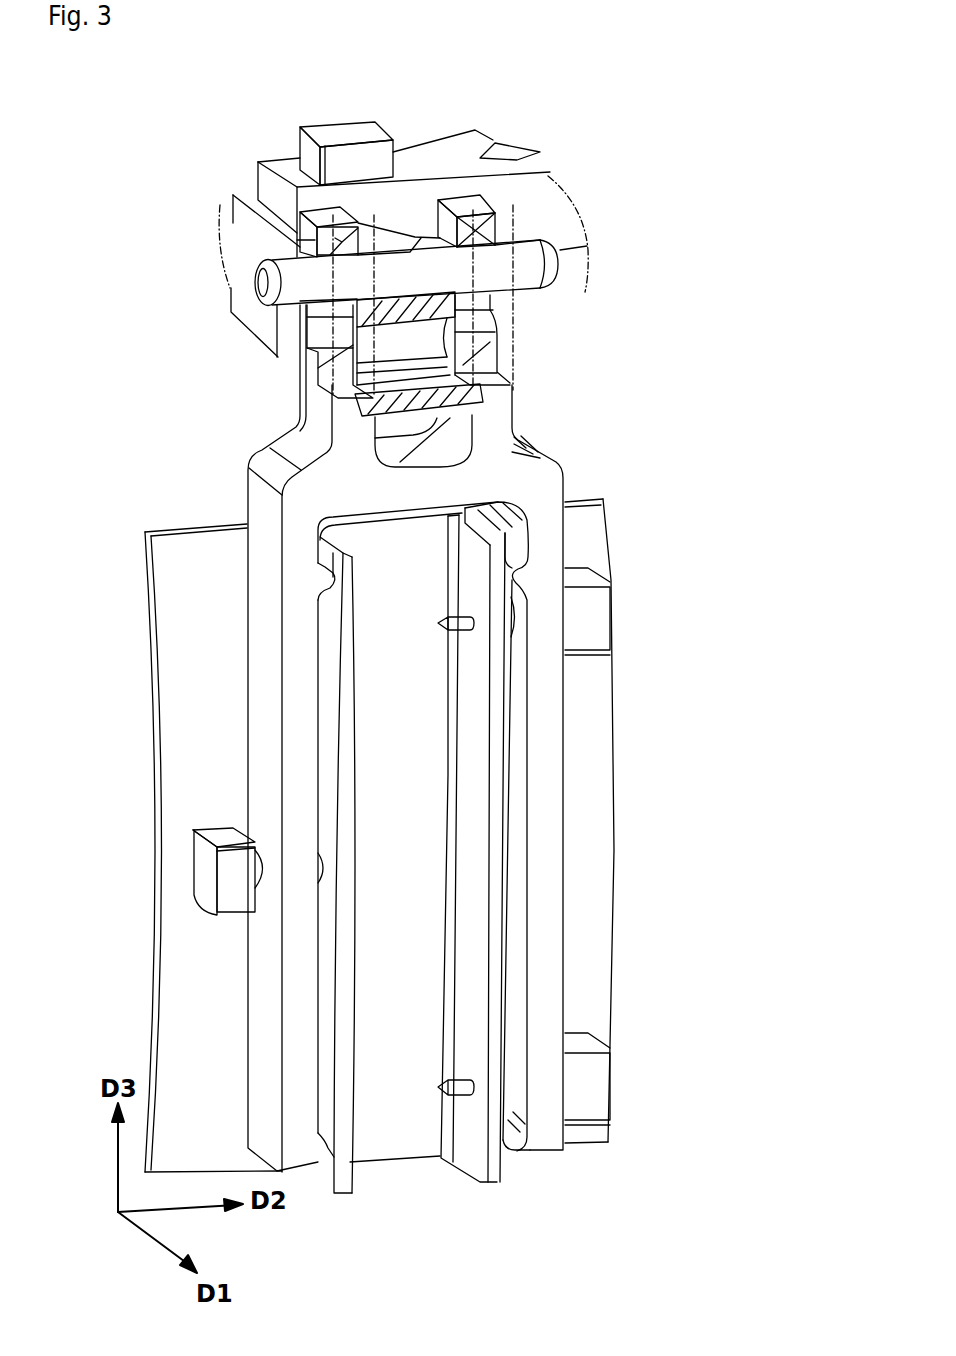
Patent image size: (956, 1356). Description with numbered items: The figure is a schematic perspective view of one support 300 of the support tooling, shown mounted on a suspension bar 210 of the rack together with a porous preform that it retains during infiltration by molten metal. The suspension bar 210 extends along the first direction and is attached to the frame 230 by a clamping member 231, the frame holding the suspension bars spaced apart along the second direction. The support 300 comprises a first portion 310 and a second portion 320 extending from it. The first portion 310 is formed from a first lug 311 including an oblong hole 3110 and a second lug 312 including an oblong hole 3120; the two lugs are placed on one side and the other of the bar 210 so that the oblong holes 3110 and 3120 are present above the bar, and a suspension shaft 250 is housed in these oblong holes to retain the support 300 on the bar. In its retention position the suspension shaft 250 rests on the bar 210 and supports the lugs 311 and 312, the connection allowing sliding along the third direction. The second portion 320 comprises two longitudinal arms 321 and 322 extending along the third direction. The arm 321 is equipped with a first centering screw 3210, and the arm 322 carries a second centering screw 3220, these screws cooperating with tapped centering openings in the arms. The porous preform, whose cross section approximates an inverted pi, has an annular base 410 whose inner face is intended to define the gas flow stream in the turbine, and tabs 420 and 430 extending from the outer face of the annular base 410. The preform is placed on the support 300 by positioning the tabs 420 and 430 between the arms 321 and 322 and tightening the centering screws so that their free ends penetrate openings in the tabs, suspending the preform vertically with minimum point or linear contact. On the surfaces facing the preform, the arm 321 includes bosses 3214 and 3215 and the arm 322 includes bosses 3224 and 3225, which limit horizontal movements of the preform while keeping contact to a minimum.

The clamping member 231 is at (347, 132).
The second lug 312 is at (475, 207).
The suspension bar 210 is at (237, 223).
The frame 230 is at (550, 199).
The first lug 311 is at (272, 233).
The suspension shaft 250 is at (530, 263).
The first portion 310 is at (520, 301).
The oblong hole 3110 is at (327, 327).
The oblong hole 3120 is at (483, 310).
The support 300 is at (605, 431).
The boss 3214 is at (325, 580).
The boss 3224 is at (517, 567).
The second centering screw 3220 is at (595, 622).
The longitudinal arm 321 is at (300, 765).
The second portion 320 is at (621, 811).
The first centering screw 3210 is at (230, 873).
The longitudinal arm 322 is at (543, 890).
The annular base 410 is at (157, 1033).
The boss 3215 is at (330, 1160).
The tab 420 is at (350, 1182).
The tab 430 is at (490, 1183).
The boss 3225 is at (512, 1140).